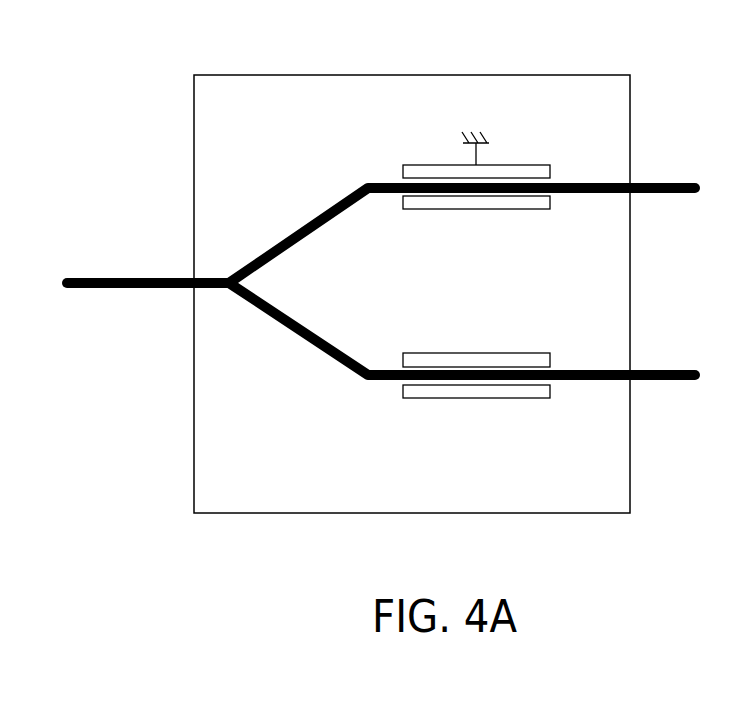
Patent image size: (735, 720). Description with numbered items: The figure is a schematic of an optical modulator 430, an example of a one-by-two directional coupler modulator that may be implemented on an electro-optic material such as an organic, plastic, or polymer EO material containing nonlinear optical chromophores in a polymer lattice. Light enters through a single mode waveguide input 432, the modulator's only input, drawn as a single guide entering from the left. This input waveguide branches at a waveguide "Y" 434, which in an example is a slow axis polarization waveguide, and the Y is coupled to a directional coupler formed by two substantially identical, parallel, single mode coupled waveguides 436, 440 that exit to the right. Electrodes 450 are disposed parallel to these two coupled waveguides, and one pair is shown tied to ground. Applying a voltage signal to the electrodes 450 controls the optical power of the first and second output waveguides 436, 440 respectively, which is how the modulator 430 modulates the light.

The optical modulator 430 is at (413, 75).
The single mode waveguide input 432 is at (147, 277).
The waveguide "Y" 434 is at (310, 220).
The single mode coupled waveguide 436 is at (650, 183).
The single mode coupled waveguide 440 is at (650, 370).
The electrodes 450 is at (525, 165).